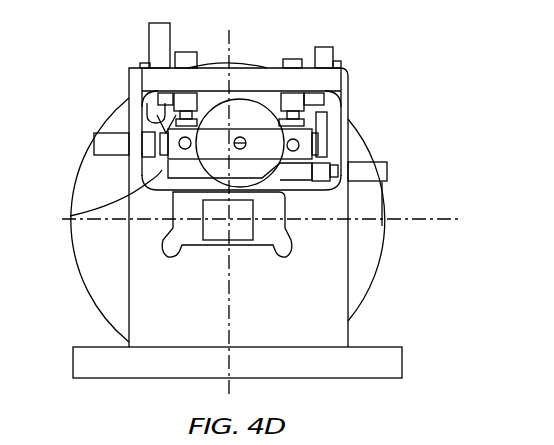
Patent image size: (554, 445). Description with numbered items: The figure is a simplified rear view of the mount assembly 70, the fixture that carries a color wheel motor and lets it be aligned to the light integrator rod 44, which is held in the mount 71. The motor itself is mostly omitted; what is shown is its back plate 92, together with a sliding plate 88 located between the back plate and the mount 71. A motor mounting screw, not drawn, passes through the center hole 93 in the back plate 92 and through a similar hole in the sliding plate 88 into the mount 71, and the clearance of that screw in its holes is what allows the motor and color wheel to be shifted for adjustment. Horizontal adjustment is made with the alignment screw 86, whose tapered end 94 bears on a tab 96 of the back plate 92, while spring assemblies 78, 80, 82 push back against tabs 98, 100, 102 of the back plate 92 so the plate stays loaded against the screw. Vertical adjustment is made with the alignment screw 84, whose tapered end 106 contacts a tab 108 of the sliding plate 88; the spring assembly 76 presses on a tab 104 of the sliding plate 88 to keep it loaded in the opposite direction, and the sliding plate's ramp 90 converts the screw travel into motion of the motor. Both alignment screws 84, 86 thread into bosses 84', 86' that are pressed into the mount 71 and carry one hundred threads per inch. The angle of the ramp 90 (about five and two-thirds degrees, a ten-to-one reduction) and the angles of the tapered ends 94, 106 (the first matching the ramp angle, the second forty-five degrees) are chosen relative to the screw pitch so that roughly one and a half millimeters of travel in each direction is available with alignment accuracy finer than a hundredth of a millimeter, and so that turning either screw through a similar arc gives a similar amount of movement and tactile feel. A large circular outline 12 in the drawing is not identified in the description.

The mount assembly 70 is at (471, 74).
The mount 71 is at (349, 332).
The supply roll 12 is at (92, 290).
The alignment screw 84 is at (130, 39).
The boss 84' is at (116, 53).
The spring assembly 80 is at (187, 52).
The spring assembly 78 is at (295, 58).
The alignment screw 86 is at (351, 40).
The boss 86' is at (363, 53).
The tapered end 106 is at (165, 102).
The tab 108 is at (152, 118).
The tab 98 is at (338, 97).
The tab 100 is at (212, 106).
The center hole 93 is at (243, 140).
The back plate 92 is at (268, 172).
The tab 102 is at (170, 188).
The sliding plate 88 is at (147, 162).
The tab 96 is at (327, 148).
The tapered end 94 is at (330, 127).
The spring assembly 76 is at (387, 160).
The spring assembly 82 is at (112, 133).
The tab 104 is at (382, 203).
The ramp 90 is at (70, 216).
The light integrator rod 44 is at (240, 242).